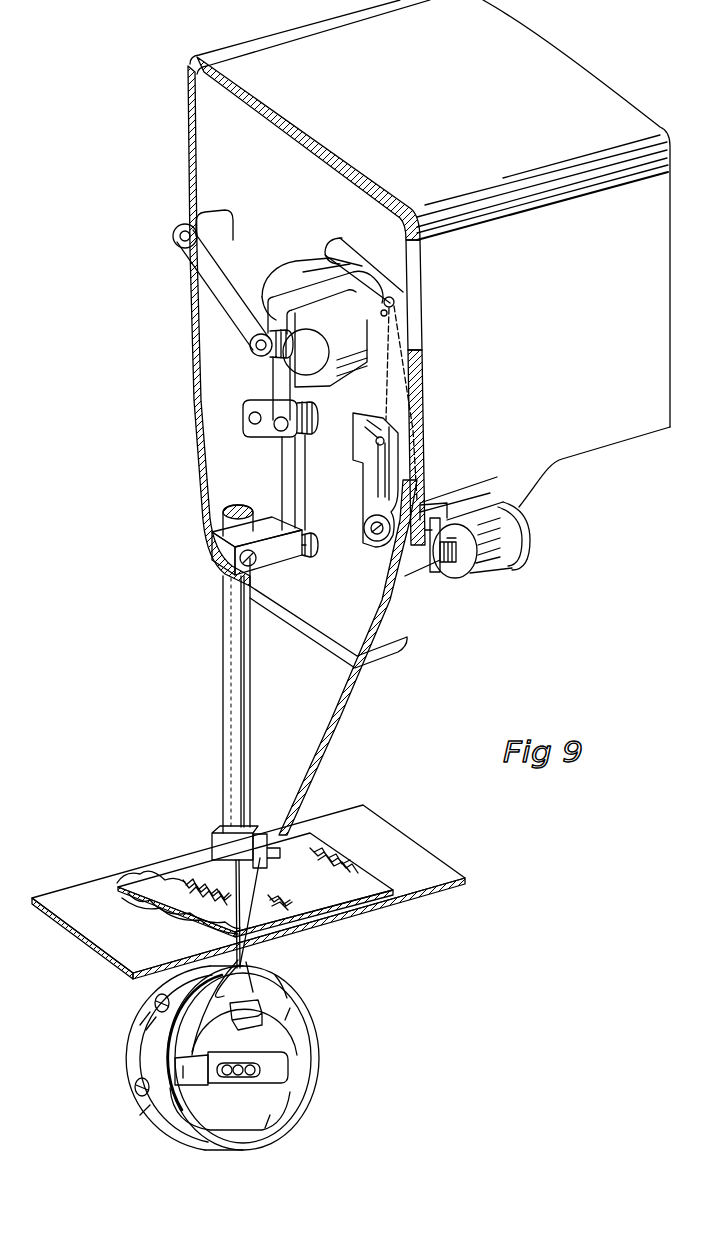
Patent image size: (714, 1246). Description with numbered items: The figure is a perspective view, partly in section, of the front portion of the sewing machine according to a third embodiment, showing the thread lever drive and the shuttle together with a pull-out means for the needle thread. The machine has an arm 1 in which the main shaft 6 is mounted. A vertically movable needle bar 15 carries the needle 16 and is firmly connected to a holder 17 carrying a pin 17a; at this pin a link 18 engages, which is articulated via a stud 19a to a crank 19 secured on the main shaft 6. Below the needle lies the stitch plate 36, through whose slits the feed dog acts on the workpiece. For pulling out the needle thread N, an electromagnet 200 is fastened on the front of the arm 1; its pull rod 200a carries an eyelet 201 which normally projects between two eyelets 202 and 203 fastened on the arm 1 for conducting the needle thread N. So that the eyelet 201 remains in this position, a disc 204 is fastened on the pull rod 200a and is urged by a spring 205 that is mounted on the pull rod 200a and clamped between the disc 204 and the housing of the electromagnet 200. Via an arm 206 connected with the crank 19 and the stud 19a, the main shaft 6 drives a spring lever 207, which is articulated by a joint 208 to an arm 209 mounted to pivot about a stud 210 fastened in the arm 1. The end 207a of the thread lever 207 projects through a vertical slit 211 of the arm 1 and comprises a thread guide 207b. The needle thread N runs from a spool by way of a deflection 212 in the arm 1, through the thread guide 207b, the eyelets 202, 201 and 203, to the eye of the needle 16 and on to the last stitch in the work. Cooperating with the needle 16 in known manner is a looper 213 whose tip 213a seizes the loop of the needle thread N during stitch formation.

The arm 1 is at (613, 437).
The main shaft 6 is at (415, 366).
The needle bar 15 is at (240, 735).
The needle 16 is at (225, 868).
The holder 17 is at (240, 570).
The pin 17a is at (316, 568).
The link 18 is at (302, 497).
The crank 19 is at (279, 287).
The stud 19a is at (252, 430).
The stitch plate 36 is at (413, 882).
The needle thread N is at (317, 763).
The electromagnet 200 is at (487, 557).
The pull rod 200a is at (450, 577).
The eyelet 201 is at (433, 540).
The eyelet 202 is at (428, 543).
The eyelet 203 is at (403, 563).
The disc 204 is at (452, 540).
The spring 205 is at (463, 578).
The arm 206 is at (252, 410).
The spring lever 207 is at (280, 375).
The end of thread lever 207a is at (404, 303).
The thread guide 207b is at (400, 314).
The joint 208 is at (250, 344).
The arm 209 is at (224, 292).
The stud 210 is at (174, 236).
The vertical slit 211 is at (412, 288).
The deflection 212 is at (365, 447).
The looper 213 is at (302, 1013).
The tip of looper 213a is at (250, 946).